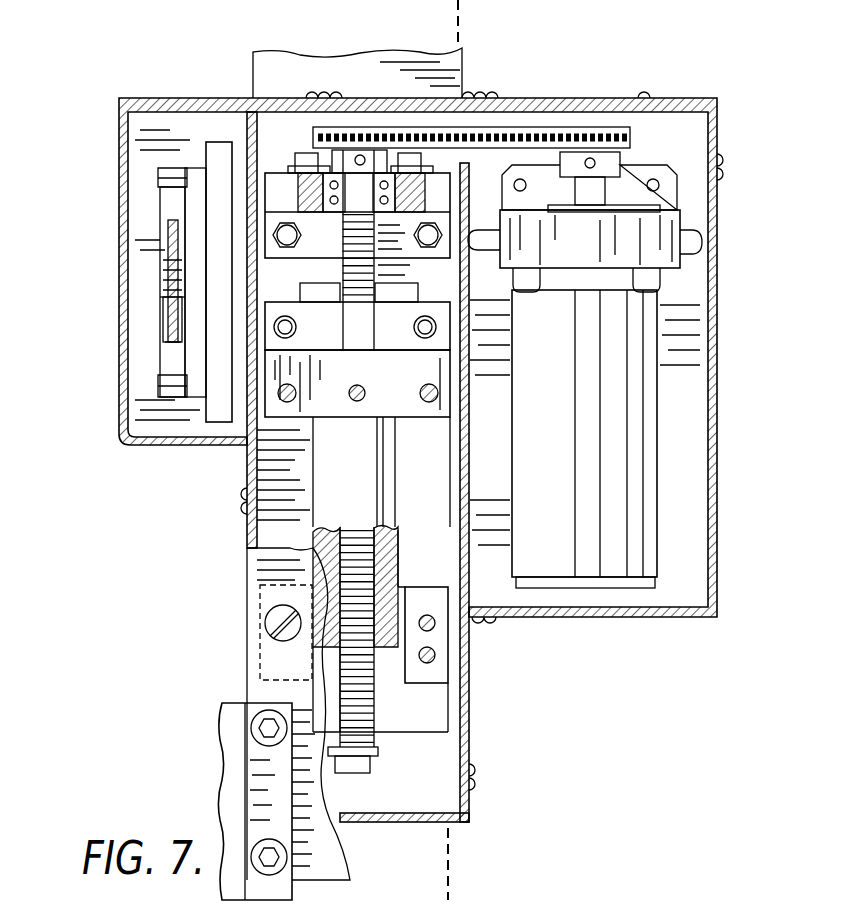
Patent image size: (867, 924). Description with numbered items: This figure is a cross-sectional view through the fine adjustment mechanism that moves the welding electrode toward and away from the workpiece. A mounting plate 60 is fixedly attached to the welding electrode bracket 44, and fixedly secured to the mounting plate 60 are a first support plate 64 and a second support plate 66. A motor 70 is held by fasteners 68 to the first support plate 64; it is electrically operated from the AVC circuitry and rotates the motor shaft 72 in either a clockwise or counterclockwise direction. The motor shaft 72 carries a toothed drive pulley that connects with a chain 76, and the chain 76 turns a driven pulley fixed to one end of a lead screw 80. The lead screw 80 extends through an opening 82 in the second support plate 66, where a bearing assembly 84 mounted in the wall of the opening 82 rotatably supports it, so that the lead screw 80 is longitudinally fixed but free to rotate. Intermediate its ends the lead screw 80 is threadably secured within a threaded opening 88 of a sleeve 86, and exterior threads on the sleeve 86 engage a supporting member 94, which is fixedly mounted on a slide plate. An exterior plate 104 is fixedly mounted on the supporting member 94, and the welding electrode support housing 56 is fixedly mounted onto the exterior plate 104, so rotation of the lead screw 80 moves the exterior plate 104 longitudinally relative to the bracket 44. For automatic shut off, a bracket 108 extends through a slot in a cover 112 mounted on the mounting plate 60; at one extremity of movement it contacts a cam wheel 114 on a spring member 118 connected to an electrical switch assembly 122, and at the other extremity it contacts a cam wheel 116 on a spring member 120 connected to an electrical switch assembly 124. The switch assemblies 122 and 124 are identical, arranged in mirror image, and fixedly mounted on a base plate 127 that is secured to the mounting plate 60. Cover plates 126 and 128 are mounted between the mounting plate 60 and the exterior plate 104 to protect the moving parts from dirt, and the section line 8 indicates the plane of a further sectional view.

The section line 8- 8 is at (460, 860).
The welding electrode bracket 44 is at (310, 75).
The welding electrode support housing 56 is at (232, 722).
The mounting plate 60 is at (697, 270).
The first support plate 64 is at (667, 225).
The second support plate 66 is at (440, 190).
The fasteners 68 is at (542, 282).
The motor 70 is at (585, 560).
The motor shaft 72 is at (660, 185).
The chain 76 is at (567, 153).
The lead screw 80 is at (343, 270).
The opening 82 is at (313, 153).
The bearing assembly 84 is at (368, 128).
The sleeve 86 is at (332, 502).
The threaded opening 88 is at (330, 580).
The supporting member 94 is at (283, 490).
The exterior plate 104 is at (252, 650).
The bracket 108 is at (190, 250).
The cover 112 is at (160, 305).
The cam wheel 114 is at (163, 172).
The cam wheel 116 is at (158, 397).
The spring member 118 is at (165, 205).
The spring member 120 is at (163, 348).
The electrical switch assembly 122 is at (162, 228).
The electrical switch assembly 124 is at (157, 361).
The cover plate 126 is at (247, 473).
The base plate 127 is at (222, 150).
The cover plate 128 is at (712, 405).